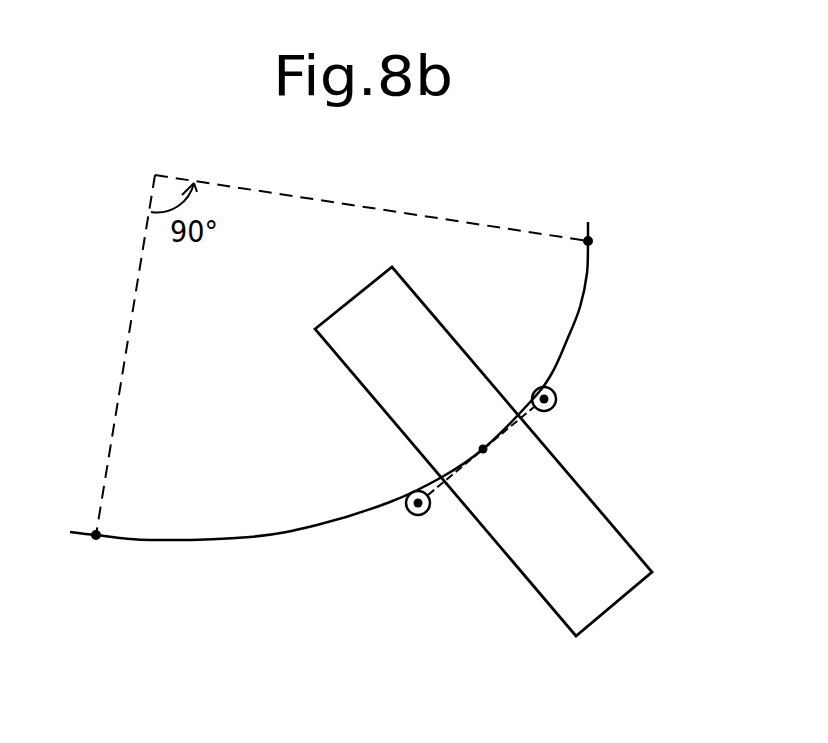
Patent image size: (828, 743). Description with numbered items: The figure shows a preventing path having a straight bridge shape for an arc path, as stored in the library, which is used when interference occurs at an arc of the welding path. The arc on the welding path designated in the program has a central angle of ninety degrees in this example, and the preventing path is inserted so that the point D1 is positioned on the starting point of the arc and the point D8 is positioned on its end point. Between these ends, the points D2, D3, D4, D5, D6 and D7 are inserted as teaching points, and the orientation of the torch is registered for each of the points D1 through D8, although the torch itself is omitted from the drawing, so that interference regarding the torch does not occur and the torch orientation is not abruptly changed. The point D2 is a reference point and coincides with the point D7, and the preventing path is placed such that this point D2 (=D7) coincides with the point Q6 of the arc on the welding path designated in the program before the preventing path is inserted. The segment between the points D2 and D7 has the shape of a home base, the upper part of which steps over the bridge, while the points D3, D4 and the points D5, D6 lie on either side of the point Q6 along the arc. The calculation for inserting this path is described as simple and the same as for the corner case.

The teaching point D1 is at (92, 555).
The reference point D2 is at (483, 451).
The teaching point D3 is at (418, 525).
The teaching point D4 is at (418, 503).
The teaching point D5 is at (594, 406).
The teaching point D6 is at (544, 399).
The teaching point D7 is at (556, 540).
The teaching point D8 is at (612, 241).
The point Q6 of the arc Q6 is at (500, 465).